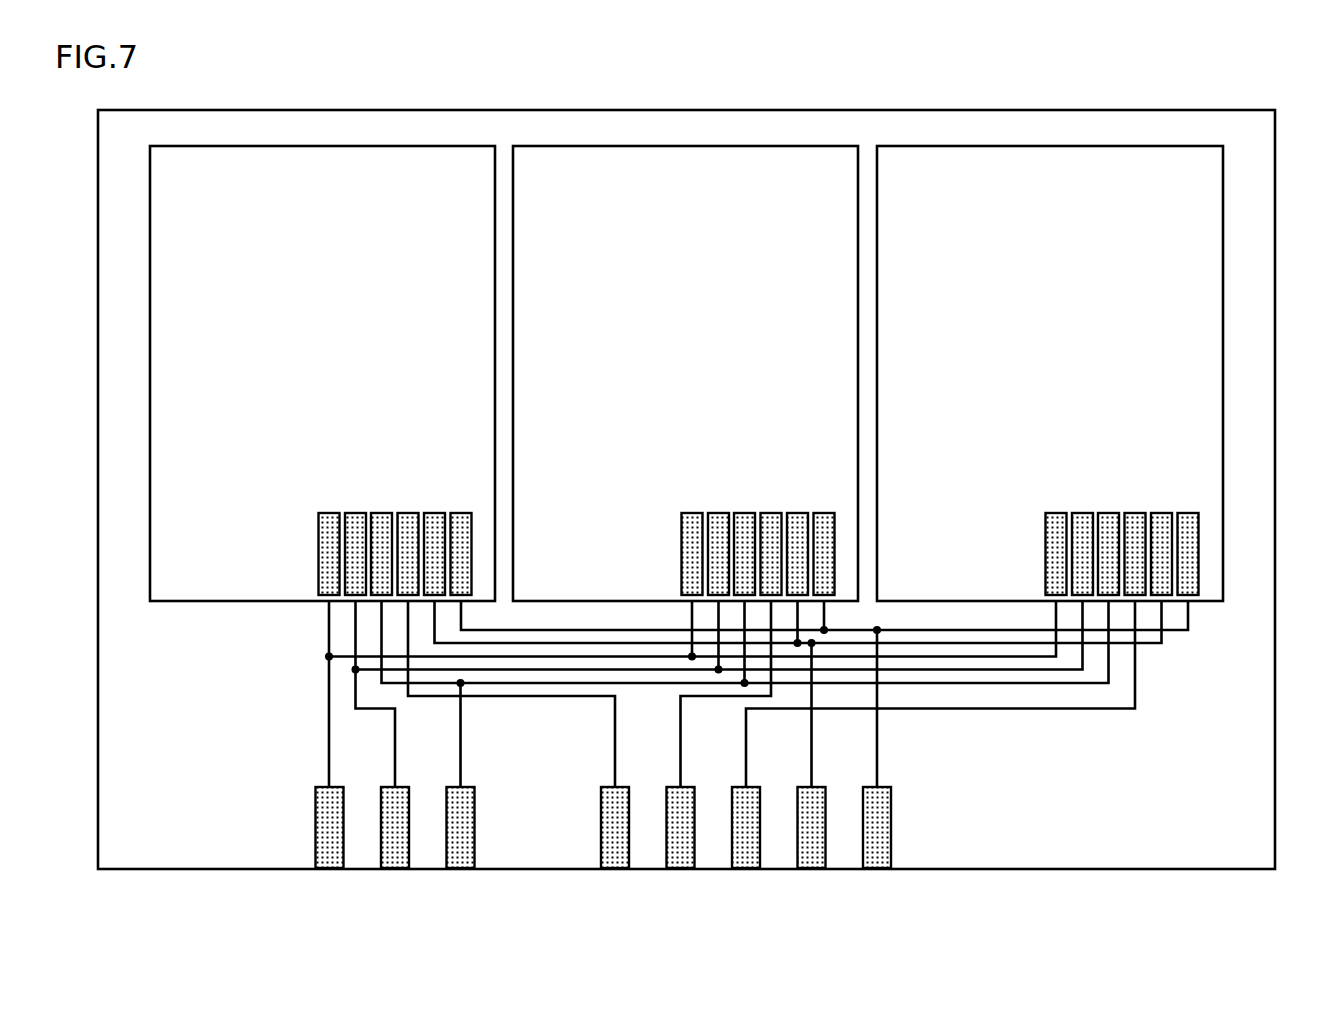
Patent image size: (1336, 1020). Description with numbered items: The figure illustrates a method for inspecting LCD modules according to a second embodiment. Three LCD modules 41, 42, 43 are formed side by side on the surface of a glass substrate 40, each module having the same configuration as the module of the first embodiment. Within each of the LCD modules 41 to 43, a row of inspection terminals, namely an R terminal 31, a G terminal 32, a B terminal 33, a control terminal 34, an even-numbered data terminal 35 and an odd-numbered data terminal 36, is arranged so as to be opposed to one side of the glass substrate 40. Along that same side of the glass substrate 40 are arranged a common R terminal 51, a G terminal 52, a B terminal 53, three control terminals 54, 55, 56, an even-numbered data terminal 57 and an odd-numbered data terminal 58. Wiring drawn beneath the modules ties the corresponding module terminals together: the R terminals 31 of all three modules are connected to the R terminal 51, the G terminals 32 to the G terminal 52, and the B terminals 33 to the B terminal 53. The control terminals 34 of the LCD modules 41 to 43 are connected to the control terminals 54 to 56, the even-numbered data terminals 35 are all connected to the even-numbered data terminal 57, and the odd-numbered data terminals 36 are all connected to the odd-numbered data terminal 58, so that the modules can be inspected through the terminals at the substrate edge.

The glass substrate 40 is at (1276, 207).
The LCD module 41 is at (428, 143).
The LCD module 42 is at (792, 143).
The LCD module 43 is at (1154, 143).
The R terminal 31 is at (329, 522).
The G terminal 32 is at (356, 522).
The B terminal 33 is at (381, 522).
The control terminal 34 is at (408, 522).
The even-numbered data terminal 35 is at (434, 522).
The odd-numbered data terminal 36 is at (461, 522).
The R terminal 51 is at (338, 800).
The G terminal 52 is at (403, 800).
The B terminal 53 is at (469, 800).
The control terminal 54 is at (606, 800).
The control terminal 55 is at (672, 800).
The control terminal 56 is at (737, 800).
The even-numbered data terminal 57 is at (803, 800).
The odd-numbered data terminal 58 is at (868, 800).